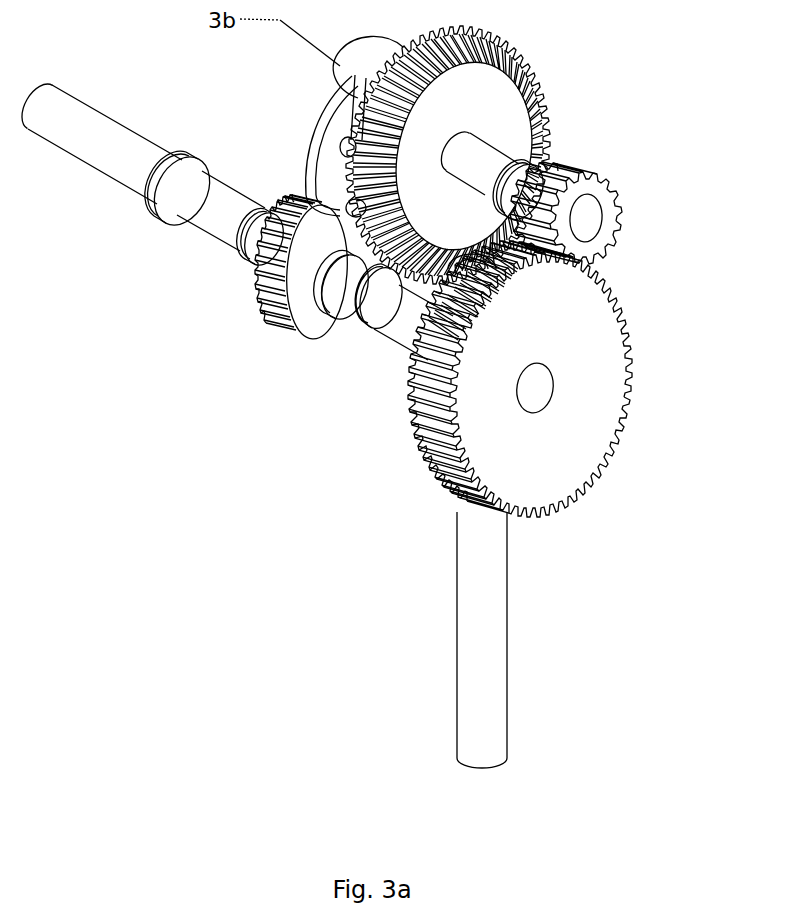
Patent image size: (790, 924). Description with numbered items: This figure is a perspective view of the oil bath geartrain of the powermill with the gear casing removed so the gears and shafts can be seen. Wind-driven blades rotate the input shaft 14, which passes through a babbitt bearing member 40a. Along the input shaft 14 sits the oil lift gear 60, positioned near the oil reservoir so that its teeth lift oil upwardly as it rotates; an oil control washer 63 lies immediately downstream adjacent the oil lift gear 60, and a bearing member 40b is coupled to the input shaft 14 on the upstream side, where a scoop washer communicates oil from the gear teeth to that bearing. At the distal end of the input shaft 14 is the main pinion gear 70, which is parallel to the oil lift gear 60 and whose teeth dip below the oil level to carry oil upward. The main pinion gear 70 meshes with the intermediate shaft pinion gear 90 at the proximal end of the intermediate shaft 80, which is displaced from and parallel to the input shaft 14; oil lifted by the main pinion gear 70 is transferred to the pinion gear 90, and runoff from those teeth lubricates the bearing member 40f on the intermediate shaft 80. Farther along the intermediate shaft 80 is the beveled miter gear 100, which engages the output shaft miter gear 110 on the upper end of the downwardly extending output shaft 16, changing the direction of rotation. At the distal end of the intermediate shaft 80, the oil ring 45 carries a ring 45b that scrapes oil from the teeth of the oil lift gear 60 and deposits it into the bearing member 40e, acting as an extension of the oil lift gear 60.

The input shaft 14 is at (72, 137).
The output shaft 16 is at (498, 683).
The babbitt bearing member 40a is at (177, 198).
The bearing member 40b is at (260, 248).
The bearing member 40e is at (350, 297).
The bearing member 40f is at (528, 178).
The oil ring 45 is at (313, 108).
The ring 45b is at (306, 147).
The oil lift gear 60 is at (274, 314).
The oil control washer 63 is at (314, 325).
The main pinion gear 70 is at (597, 378).
The intermediate shaft 80 is at (477, 157).
The intermediate shaft pinion gear 90 is at (603, 200).
The miter gear 100 is at (497, 80).
The output shaft miter gear 110 is at (447, 262).